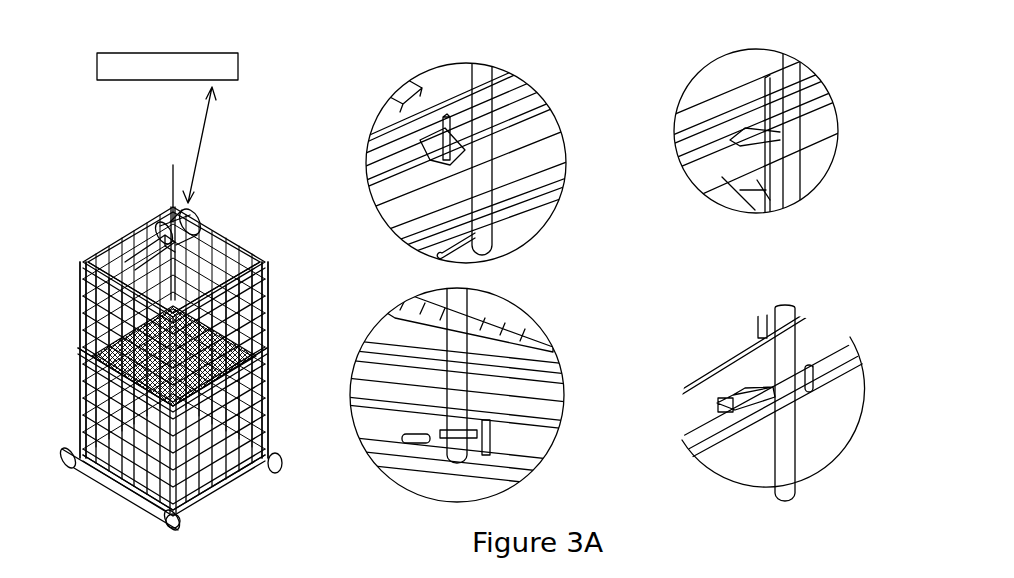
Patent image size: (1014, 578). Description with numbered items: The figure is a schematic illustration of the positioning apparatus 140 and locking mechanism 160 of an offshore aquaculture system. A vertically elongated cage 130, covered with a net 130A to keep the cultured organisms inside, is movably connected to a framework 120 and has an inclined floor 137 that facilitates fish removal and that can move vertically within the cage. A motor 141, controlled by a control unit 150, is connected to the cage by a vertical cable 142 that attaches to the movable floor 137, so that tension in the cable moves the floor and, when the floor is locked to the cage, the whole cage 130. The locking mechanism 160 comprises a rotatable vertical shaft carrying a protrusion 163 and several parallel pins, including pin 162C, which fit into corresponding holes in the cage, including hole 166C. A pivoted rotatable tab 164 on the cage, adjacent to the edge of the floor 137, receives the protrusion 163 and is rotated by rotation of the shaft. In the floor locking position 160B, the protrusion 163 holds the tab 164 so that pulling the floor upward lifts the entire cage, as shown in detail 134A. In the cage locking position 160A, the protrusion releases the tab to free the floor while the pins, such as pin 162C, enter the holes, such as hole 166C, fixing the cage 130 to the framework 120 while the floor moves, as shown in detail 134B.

The positioning apparatus 140 is at (135, 125).
The control unit 150 is at (240, 64).
The vertical cable 142 is at (172, 168).
The motor 141 is at (195, 207).
The framework 120 is at (84, 282).
The cage 130 is at (105, 300).
The inclined floor 137 is at (92, 372).
The locking mechanism 160 is at (244, 318).
The detail 134B is at (268, 384).
The detail 134A is at (222, 480).
The cage locking position 160A is at (490, 25).
The protrusion 163 is at (430, 90).
The rotatable tab 164 is at (395, 112).
The net 130A is at (540, 95).
The floor locking position 160B is at (775, 29).
The pin 162C is at (755, 208).
The hole 166C is at (405, 440).